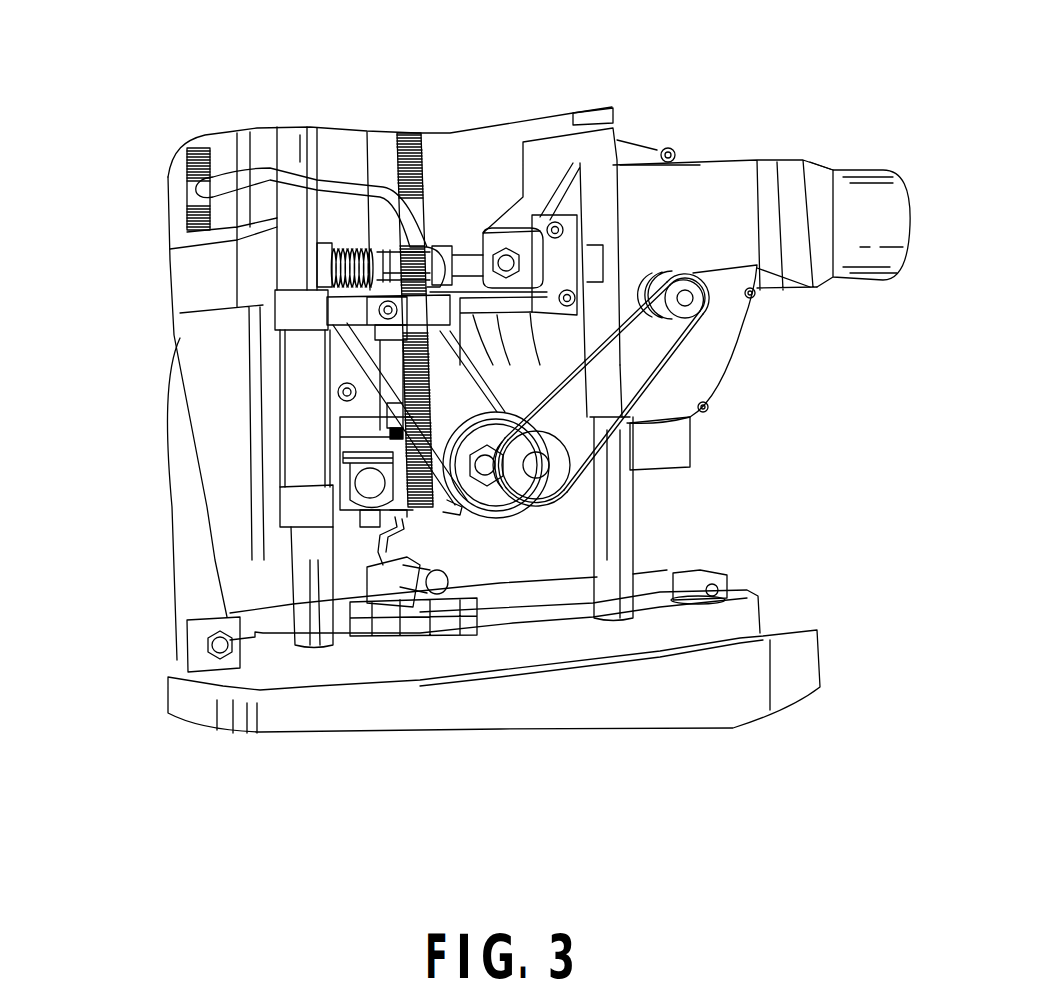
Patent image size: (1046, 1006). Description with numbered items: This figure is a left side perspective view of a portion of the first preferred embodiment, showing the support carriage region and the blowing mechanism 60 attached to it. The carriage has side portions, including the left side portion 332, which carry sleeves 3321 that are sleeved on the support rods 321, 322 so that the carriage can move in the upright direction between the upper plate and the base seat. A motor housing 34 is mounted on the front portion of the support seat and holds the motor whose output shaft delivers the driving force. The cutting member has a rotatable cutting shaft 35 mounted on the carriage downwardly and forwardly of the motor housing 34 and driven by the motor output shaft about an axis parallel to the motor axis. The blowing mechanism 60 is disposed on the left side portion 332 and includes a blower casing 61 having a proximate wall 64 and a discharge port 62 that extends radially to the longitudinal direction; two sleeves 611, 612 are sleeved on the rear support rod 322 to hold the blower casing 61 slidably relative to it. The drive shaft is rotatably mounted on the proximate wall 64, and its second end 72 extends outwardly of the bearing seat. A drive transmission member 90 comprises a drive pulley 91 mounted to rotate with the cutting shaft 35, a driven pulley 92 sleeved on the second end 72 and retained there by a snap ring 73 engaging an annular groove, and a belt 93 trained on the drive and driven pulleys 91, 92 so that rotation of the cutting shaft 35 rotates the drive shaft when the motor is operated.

The motor housing 34 is at (193, 273).
The sleeves 3321 is at (303, 507).
The left side portion 332 is at (280, 517).
The support rod 321 is at (303, 568).
The rear support rod 322 is at (623, 618).
The cutting shaft 35 is at (540, 468).
The drive transmission member 90 is at (552, 468).
The drive pulley 91 is at (549, 487).
The driven pulley 92 is at (687, 323).
The belt 93 is at (687, 420).
The second end 72 is at (685, 298).
The snap ring 73 is at (757, 265).
The blowing mechanism 60 is at (738, 160).
The discharge port 62 is at (857, 183).
The proximate wall 64 is at (689, 177).
The blower casing 61 is at (527, 210).
The sleeve 611 is at (622, 140).
The sleeve 612 is at (620, 445).